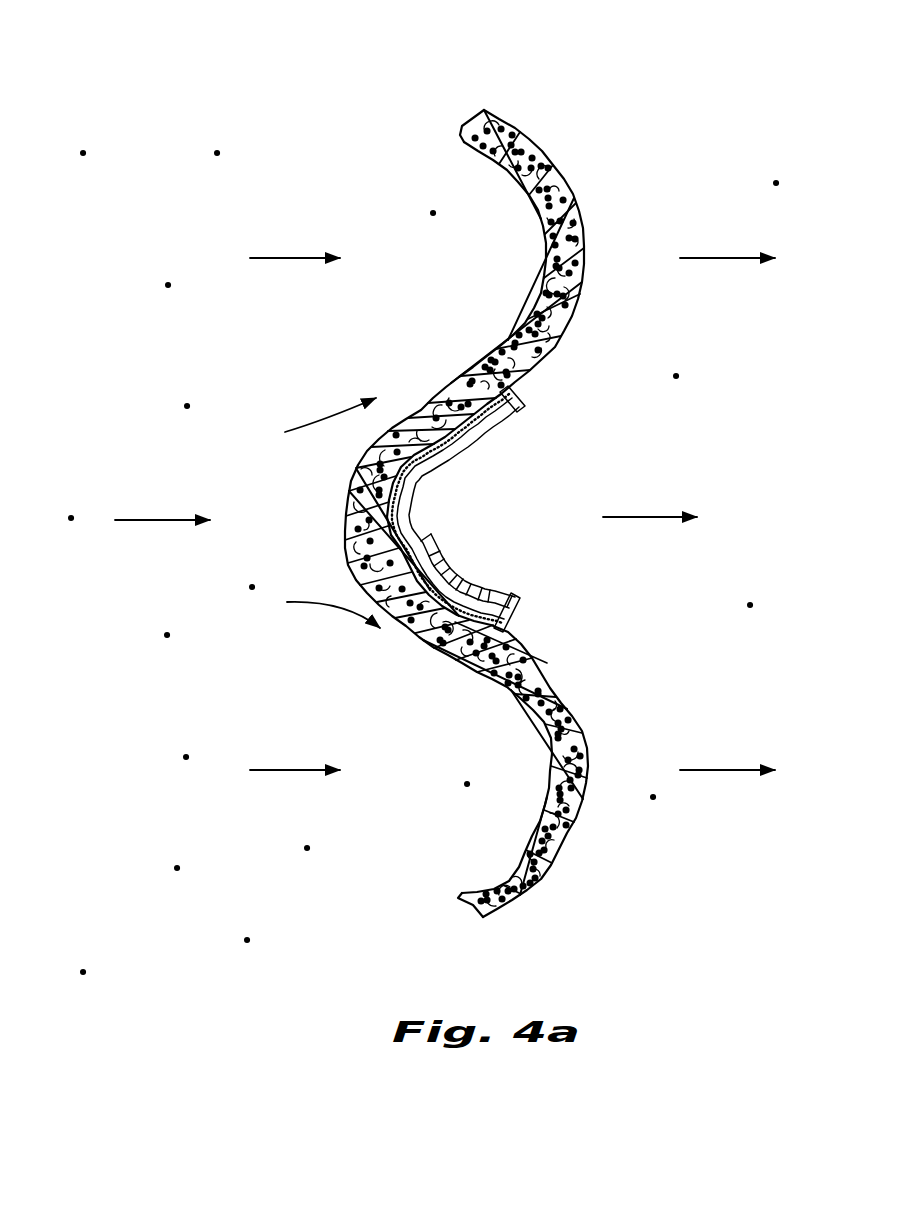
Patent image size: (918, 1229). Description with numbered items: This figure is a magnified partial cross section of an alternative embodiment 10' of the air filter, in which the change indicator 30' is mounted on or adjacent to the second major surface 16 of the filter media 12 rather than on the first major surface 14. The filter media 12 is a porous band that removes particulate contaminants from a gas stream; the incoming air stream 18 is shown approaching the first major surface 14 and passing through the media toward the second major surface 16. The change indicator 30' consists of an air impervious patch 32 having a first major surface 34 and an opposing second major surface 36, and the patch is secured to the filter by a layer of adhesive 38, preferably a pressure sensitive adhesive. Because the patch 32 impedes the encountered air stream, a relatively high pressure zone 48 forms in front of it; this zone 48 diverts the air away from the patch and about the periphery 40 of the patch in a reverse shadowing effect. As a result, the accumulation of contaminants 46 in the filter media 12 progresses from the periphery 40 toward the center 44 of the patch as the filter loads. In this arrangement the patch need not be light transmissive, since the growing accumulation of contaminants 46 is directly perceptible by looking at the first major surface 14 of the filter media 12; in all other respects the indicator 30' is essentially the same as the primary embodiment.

The alternative embodiment of the filter 10' is at (435, 465).
The filter media 12 is at (508, 114).
The first major surface 14 is at (490, 165).
The second major surface 16 is at (562, 180).
The air flow 18 is at (273, 258).
The change indicator 30' is at (497, 507).
The air impervious patch 32 is at (493, 598).
The first major surface of patch 34 is at (400, 558).
The second major surface of patch 36 is at (447, 563).
The layer of adhesive 38 is at (500, 627).
The periphery of the patch 40 is at (500, 410).
The center of the patch 44 is at (387, 510).
The contaminants 46 is at (217, 153).
The high pressure zone 48 is at (497, 512).